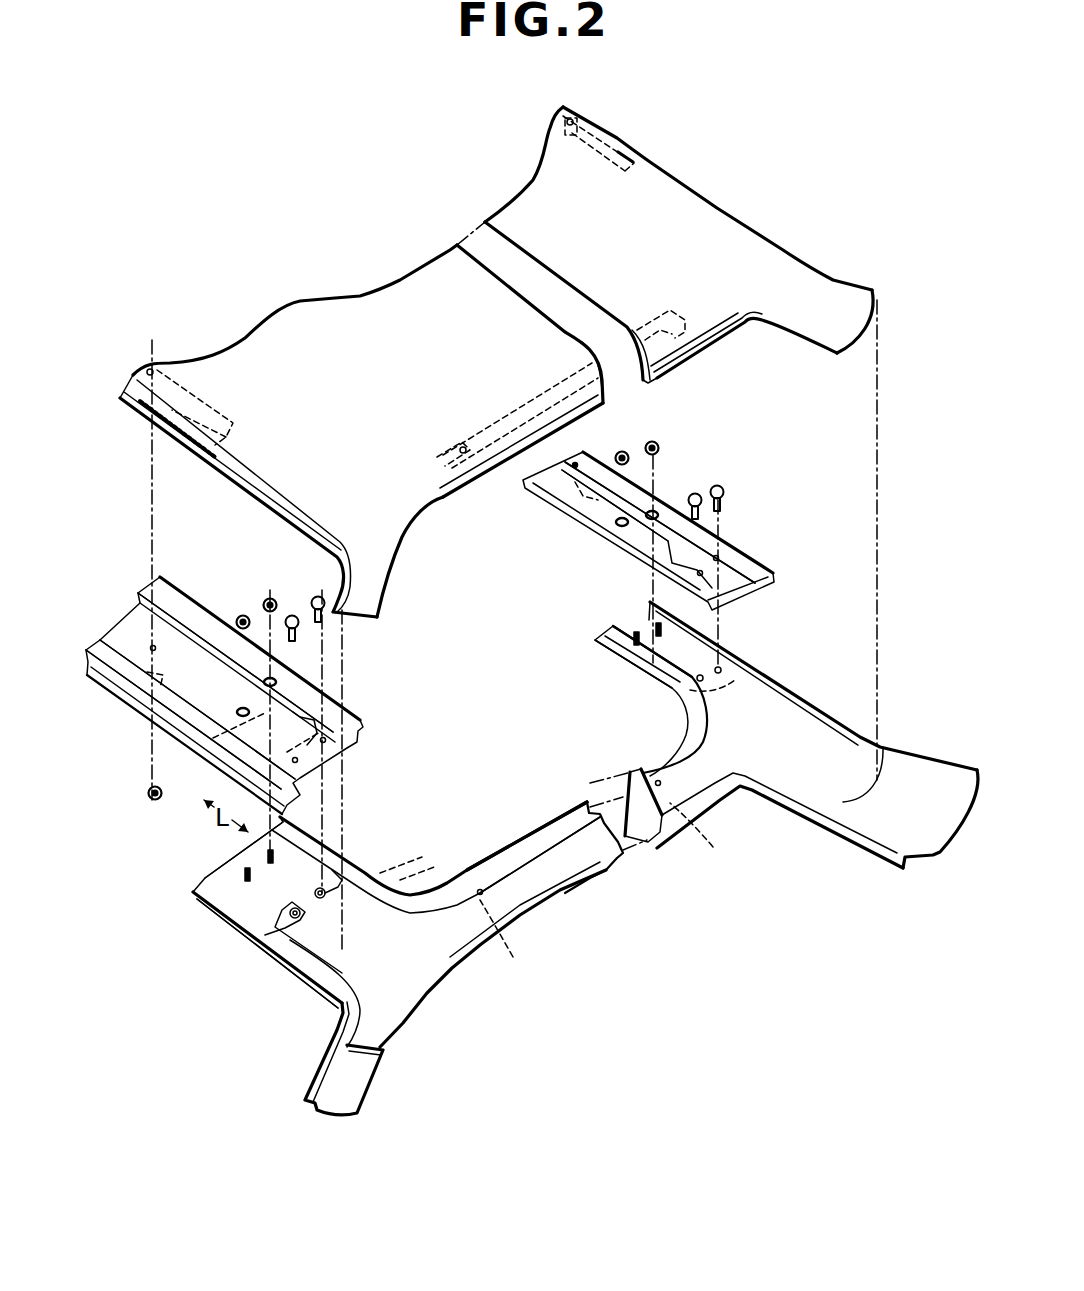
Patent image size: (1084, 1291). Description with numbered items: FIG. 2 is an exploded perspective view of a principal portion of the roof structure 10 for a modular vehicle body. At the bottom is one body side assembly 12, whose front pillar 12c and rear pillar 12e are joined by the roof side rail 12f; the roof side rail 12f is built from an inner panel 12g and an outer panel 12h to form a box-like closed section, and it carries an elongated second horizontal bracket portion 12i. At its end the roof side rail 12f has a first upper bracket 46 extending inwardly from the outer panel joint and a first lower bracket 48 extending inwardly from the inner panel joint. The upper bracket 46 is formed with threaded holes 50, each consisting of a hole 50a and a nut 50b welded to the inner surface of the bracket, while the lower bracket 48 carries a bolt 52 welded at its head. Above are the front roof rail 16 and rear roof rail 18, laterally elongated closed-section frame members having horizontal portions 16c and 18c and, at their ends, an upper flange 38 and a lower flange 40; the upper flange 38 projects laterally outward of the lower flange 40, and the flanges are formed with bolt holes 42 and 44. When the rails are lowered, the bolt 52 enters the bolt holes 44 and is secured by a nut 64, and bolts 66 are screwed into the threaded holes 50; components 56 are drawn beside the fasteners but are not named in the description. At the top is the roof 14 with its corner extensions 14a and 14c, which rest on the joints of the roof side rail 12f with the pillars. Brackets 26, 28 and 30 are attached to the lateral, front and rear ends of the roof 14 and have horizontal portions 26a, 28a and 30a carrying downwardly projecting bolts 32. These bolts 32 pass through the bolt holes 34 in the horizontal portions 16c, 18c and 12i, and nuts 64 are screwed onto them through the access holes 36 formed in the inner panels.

The roof structure 10 is at (776, 190).
The body side assembly 12 is at (432, 990).
The front pillar 12c is at (347, 1070).
The rear pillar 12e is at (897, 813).
The roof side rail 12f is at (570, 880).
The inner panel 12g is at (633, 848).
The outer panel 12h is at (655, 822).
The second horizontal bracket portion 12i is at (563, 833).
The roof 14 is at (333, 299).
The extension 14a is at (374, 617).
The extension 14c is at (848, 300).
The front roof rail 16 is at (127, 706).
The horizontal portion 16c is at (178, 655).
The rear roof rail 18 is at (738, 542).
The horizontal portion 18c is at (607, 502).
The bracket 26 is at (632, 367).
The horizontal portion 26a is at (580, 347).
The bracket 28 is at (227, 447).
The horizontal portion 28a is at (215, 418).
The rear bracket 30 is at (640, 165).
The horizontal portion 30a is at (630, 156).
The bolts 32 is at (580, 117).
The bolt holes 34 is at (570, 470).
The access holes 36 is at (588, 487).
The upper flange 38 is at (733, 578).
The lower flange 40 is at (658, 575).
The bolt holes 42 is at (702, 573).
The bolt holes 44 is at (645, 535).
The first upper bracket 46 is at (337, 945).
The first lower bracket 48 is at (260, 907).
The threaded holes 50 is at (728, 670).
The holes 50a is at (390, 854).
The nuts 50b is at (430, 857).
The bolt 52 is at (645, 648).
The washers 56 is at (626, 519).
The nuts 64 is at (628, 457).
The bolts 66 is at (698, 495).